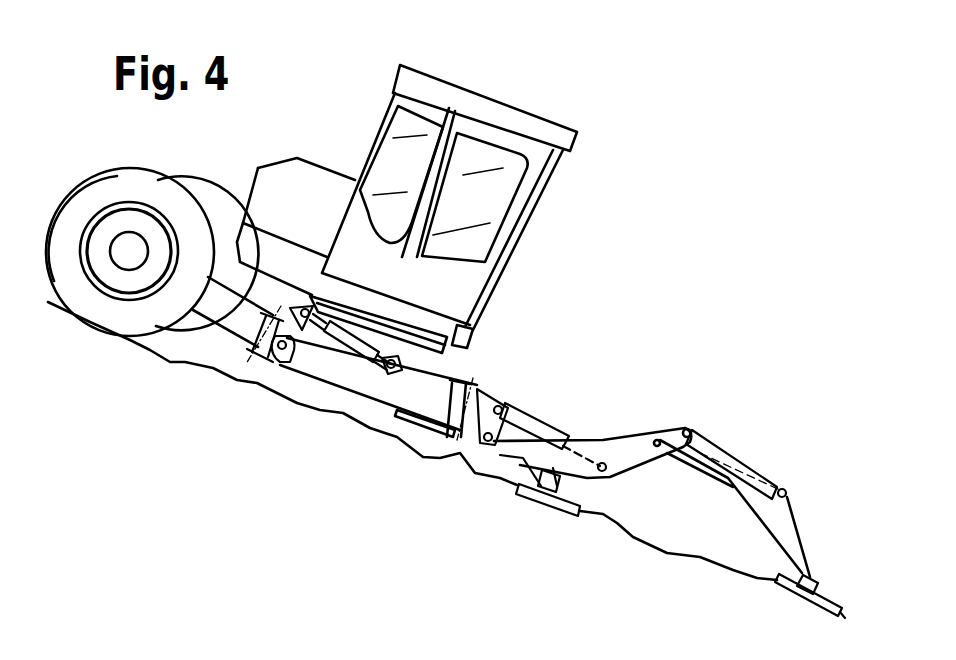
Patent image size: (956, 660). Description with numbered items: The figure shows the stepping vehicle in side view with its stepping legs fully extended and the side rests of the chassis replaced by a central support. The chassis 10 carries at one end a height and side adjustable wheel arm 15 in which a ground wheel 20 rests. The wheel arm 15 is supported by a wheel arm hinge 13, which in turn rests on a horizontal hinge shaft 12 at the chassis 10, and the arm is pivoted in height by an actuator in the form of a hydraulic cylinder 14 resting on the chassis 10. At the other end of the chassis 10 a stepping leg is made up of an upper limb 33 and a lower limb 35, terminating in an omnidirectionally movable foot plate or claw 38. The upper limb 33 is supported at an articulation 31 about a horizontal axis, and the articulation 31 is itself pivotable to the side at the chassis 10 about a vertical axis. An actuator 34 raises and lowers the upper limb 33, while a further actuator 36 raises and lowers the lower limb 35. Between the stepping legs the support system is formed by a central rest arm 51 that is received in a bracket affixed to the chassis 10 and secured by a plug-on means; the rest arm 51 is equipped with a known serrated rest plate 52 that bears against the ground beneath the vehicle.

The chassis 10 is at (430, 385).
The horizontal hinge shaft 12 is at (279, 370).
The wheel arm hinge 13 is at (278, 307).
The hydraulic cylinder 14 is at (355, 352).
The wheel arm 15 is at (217, 313).
The ground wheel 20 is at (96, 308).
The articulation 31 is at (480, 427).
The upper limb 33 is at (627, 448).
The actuator 34 is at (537, 430).
The lower limb 35 is at (743, 465).
The actuator 36 is at (693, 460).
The foot plate 38 is at (785, 597).
The rest arm 51 is at (585, 499).
The rest plate 52 is at (543, 500).